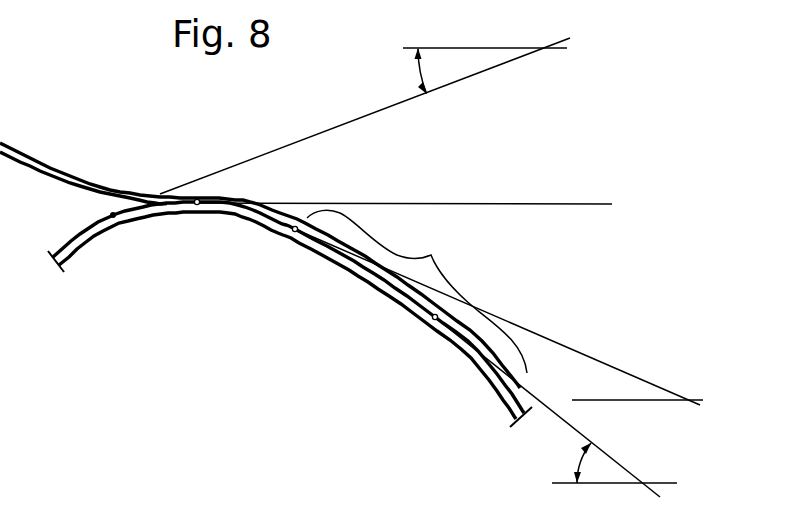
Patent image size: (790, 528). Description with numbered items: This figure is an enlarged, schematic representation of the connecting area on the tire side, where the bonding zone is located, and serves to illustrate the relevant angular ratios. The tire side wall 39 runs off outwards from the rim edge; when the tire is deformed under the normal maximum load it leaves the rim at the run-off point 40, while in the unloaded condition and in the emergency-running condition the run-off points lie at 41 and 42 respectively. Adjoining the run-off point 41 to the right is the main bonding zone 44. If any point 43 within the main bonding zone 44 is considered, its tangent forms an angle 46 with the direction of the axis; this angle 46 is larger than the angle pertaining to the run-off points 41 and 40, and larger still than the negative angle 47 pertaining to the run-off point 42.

The tire side wall 39 is at (17, 152).
The run-off point 40 is at (197, 199).
The run-off point 41 is at (297, 226).
The run-off point 42 is at (113, 213).
The point within the main bonding zone 43 is at (438, 315).
The main bonding zone 44 is at (417, 291).
The angle 46 is at (612, 460).
The negative angle 47 is at (365, 116).